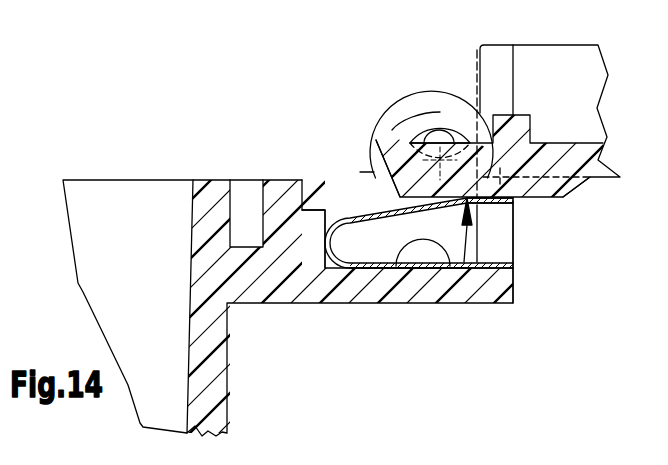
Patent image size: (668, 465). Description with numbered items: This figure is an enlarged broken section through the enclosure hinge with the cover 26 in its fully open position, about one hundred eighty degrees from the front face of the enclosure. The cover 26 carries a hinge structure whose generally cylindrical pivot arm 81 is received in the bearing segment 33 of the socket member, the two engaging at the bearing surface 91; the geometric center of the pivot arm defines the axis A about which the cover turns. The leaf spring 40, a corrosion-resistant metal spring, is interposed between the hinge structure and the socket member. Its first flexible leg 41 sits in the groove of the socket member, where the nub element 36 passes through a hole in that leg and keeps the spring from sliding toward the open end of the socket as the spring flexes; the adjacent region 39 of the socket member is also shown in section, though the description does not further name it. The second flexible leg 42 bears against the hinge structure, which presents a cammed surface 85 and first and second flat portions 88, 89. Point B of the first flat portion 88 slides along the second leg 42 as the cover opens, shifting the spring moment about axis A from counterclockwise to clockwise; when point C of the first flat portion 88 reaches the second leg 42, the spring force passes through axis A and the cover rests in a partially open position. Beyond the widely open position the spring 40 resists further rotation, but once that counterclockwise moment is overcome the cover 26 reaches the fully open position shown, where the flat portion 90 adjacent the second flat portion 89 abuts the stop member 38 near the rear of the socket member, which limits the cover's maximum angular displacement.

The cover 26 is at (593, 165).
The bearing segment 33 is at (410, 107).
The nub element 36 is at (398, 266).
The stop member 38 is at (500, 177).
The groove 39 is at (308, 240).
The leaf spring 40 is at (483, 206).
The first flexible leg 41 is at (515, 200).
The second flexible leg 42 is at (517, 205).
The pivot arm 81 is at (405, 140).
The cammed surface 85 is at (450, 258).
The first flat portion 88 is at (373, 172).
The second flat portion 89 is at (540, 200).
The flat portion 90 is at (552, 202).
The bearing surface 91 is at (450, 130).
The geometric center of pivot arms A is at (477, 73).
The point B of flat portion B is at (376, 130).
The point C of first flat portion C is at (430, 190).